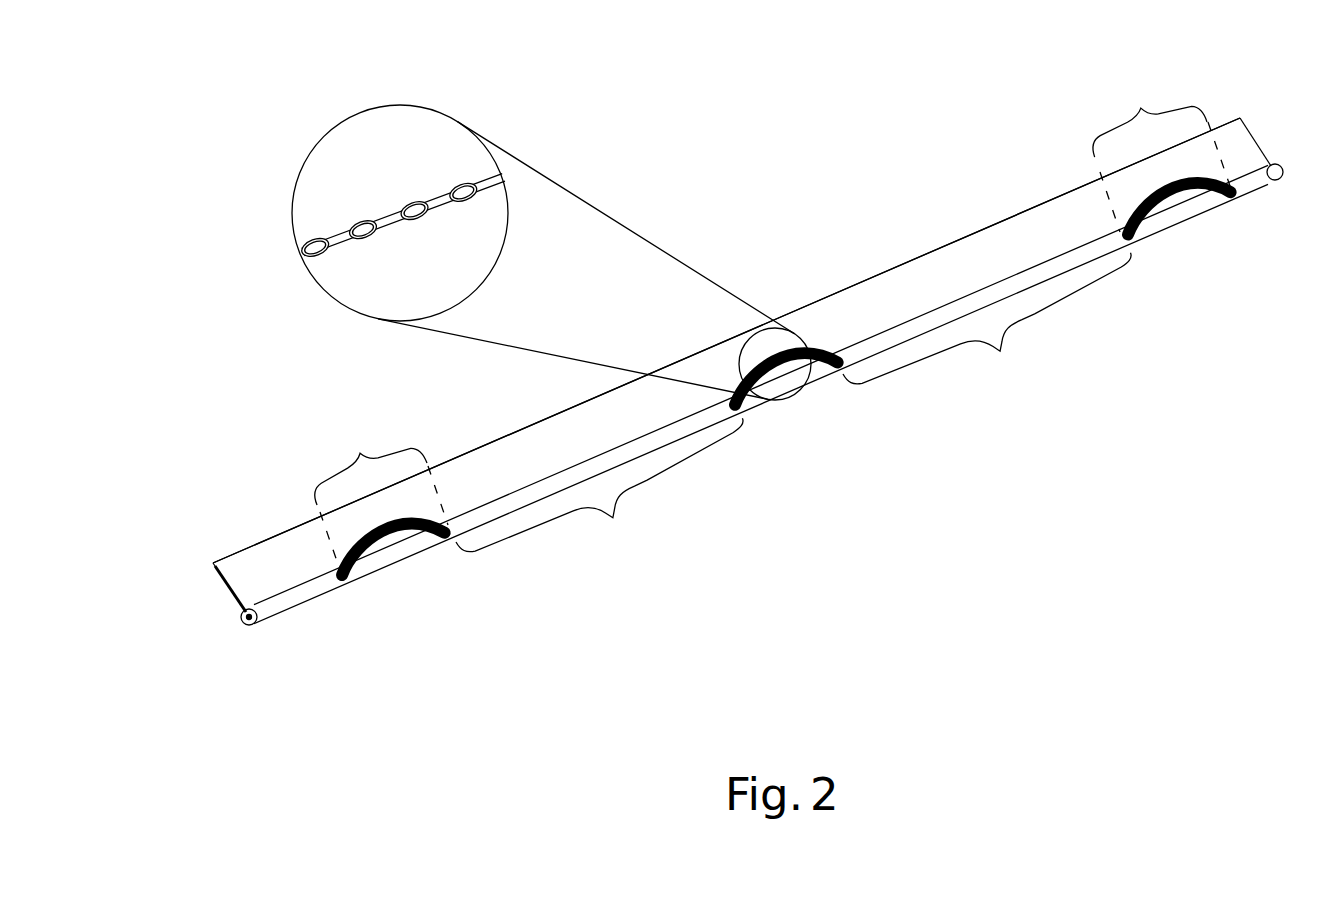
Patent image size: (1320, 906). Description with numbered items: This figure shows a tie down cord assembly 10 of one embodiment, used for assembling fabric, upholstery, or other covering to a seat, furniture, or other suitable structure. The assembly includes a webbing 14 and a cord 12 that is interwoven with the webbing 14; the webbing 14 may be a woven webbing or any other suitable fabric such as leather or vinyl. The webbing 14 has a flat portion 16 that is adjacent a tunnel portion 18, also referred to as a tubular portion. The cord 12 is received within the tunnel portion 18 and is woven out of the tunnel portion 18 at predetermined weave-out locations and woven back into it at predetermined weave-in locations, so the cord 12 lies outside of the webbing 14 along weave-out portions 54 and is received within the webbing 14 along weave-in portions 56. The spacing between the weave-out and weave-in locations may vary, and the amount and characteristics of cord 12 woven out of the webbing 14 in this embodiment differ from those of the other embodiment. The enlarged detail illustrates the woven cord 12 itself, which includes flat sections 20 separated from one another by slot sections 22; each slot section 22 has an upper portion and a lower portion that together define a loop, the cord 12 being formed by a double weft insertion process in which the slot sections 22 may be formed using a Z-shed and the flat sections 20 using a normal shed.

The tie down cord assembly 10 is at (850, 147).
The cord 12 is at (747, 403).
The webbing 14 is at (1257, 134).
The flat portion 16 is at (1040, 233).
The tunnel portion 18 is at (822, 372).
The flat sections 20 is at (387, 208).
The slot sections 22 is at (331, 251).
The weave-out portions 54 is at (767, 326).
The weave-in portions 56 is at (801, 416).